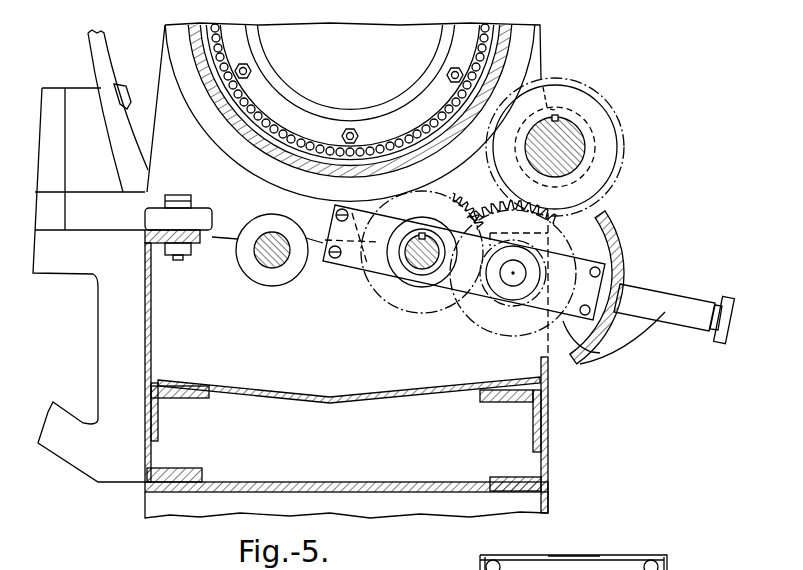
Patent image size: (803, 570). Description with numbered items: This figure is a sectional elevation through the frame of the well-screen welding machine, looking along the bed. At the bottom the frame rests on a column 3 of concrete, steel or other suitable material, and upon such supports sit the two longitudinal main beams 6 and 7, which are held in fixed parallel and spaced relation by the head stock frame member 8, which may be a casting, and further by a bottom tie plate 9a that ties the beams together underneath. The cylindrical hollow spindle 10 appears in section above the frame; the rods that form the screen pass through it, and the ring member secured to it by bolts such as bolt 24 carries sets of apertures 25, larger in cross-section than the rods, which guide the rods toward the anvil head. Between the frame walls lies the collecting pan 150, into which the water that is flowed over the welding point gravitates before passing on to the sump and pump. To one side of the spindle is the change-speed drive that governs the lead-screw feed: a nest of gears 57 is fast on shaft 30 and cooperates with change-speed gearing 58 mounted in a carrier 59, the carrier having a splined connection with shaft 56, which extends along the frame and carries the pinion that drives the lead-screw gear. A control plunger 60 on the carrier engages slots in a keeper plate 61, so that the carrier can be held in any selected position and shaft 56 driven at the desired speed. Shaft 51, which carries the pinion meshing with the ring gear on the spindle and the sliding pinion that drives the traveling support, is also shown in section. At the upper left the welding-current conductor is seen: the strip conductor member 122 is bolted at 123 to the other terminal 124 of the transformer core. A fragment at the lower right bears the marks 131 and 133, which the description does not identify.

The column 3 is at (157, 501).
The longitudinal main beam 6 is at (548, 440).
The longitudinal main beam 7 is at (150, 461).
The head stock frame member 8 is at (230, 222).
The bottom tie plate 9a is at (417, 483).
The cylindrical hollow spindle 10 is at (270, 137).
The bolt 24 is at (447, 74).
The apertures 25 is at (333, 146).
The shaft 30 is at (570, 140).
The shaft 51 is at (275, 266).
The shaft 56 is at (415, 268).
The nest of gears 57 is at (623, 158).
The change-speed gearing 58 is at (480, 318).
The carrier 59 is at (350, 265).
The control plunger 60 is at (715, 300).
The keeper plate 61 is at (622, 240).
The strip conductor member 122 is at (100, 77).
The bolt 123 is at (130, 106).
The terminal 124 is at (98, 172).
The plate 131 is at (630, 541).
The slot 133 is at (598, 569).
The collecting pan 150 is at (377, 399).